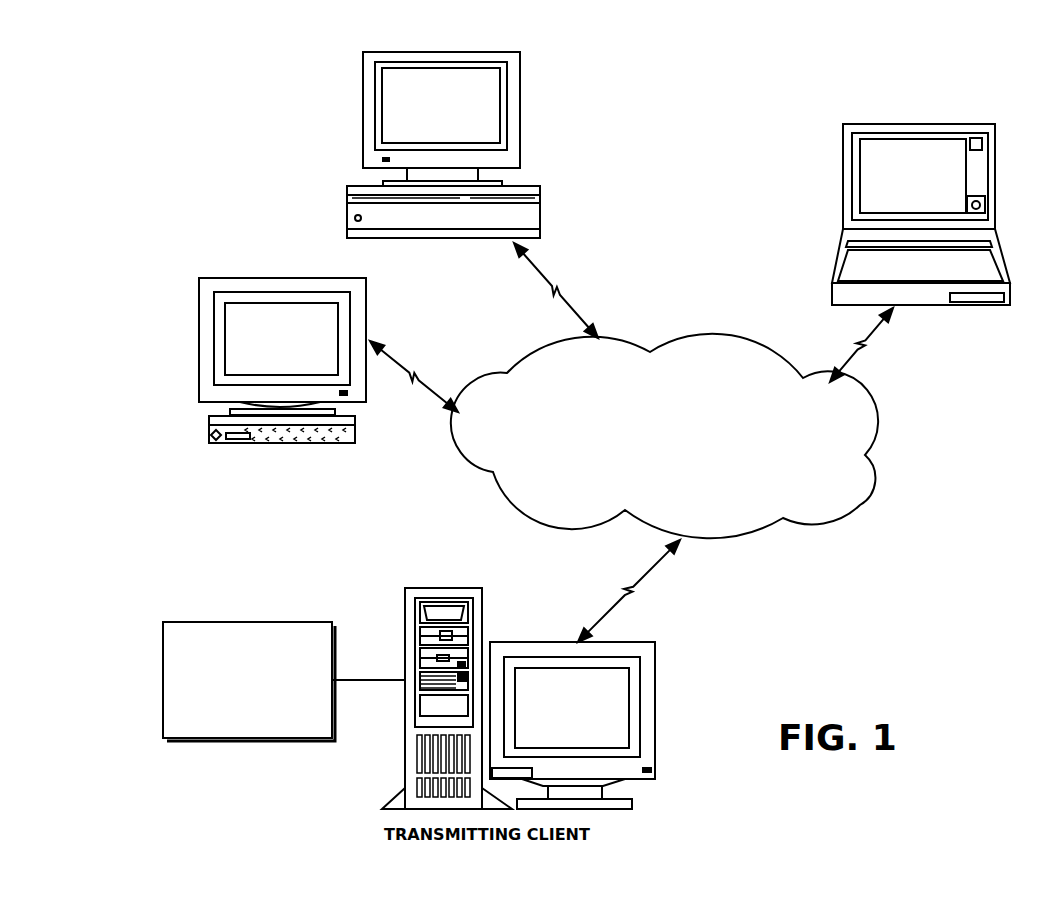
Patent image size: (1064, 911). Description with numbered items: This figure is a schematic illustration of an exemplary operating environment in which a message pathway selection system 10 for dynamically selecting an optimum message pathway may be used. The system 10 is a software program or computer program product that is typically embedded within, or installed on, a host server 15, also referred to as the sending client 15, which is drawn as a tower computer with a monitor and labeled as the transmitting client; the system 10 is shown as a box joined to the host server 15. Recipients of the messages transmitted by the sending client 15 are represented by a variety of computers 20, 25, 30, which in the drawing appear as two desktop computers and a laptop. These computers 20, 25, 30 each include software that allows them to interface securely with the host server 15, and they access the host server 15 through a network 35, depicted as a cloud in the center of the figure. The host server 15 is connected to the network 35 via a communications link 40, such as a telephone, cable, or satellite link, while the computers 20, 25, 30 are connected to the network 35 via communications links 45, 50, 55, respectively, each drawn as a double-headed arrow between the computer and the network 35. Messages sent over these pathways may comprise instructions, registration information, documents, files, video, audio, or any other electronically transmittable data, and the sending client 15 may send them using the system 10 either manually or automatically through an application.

The message pathway selection system 10 is at (163, 660).
The host server 15 is at (405, 628).
The computer 20 is at (365, 327).
The computer 25 is at (520, 97).
The computer 30 is at (1008, 256).
The network 35 is at (860, 505).
The communications link 40 is at (620, 585).
The communications link 45 is at (415, 368).
The communications link 50 is at (562, 297).
The communications link 55 is at (855, 353).